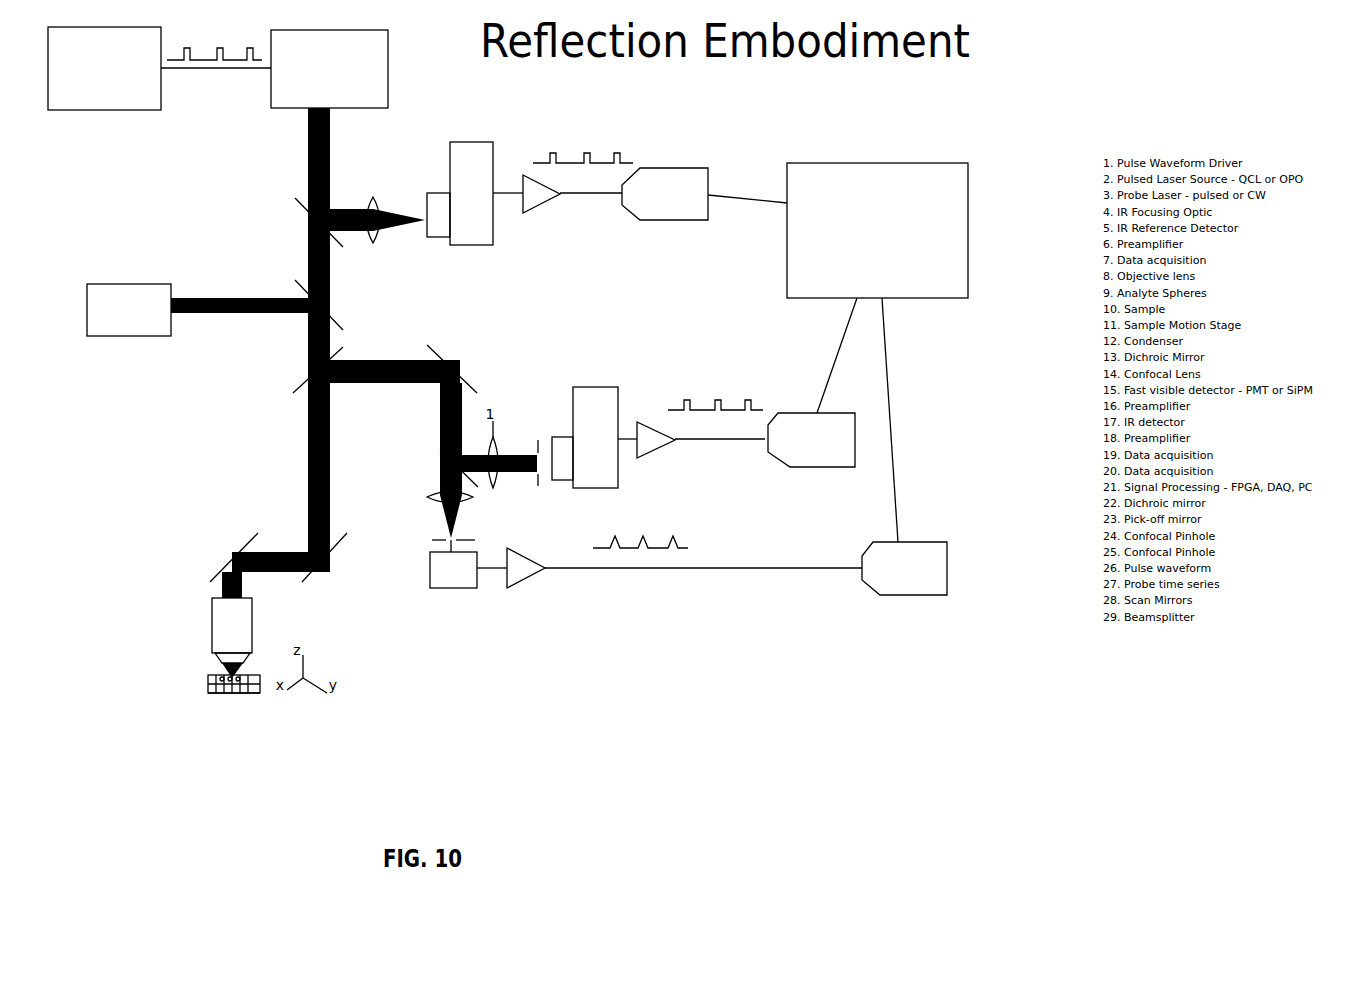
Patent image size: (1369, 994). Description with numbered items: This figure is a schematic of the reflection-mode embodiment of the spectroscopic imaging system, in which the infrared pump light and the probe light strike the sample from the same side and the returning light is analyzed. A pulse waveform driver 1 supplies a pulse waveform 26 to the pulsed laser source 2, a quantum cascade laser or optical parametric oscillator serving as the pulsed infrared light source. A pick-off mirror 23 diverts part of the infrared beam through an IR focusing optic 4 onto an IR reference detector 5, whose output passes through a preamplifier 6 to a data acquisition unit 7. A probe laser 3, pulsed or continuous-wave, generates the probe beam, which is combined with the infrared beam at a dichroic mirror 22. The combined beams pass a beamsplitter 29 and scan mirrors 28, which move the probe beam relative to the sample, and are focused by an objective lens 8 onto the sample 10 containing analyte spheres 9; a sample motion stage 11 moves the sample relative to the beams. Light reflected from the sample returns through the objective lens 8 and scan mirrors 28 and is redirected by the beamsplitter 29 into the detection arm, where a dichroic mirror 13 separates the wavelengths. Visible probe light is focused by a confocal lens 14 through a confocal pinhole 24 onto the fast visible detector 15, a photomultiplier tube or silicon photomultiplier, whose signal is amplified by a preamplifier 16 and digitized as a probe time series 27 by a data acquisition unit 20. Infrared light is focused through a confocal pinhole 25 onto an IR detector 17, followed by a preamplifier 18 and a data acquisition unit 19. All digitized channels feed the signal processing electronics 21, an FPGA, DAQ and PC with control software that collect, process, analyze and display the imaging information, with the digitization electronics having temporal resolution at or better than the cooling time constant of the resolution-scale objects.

The pulse waveform driver 1 is at (159, 68).
The pulsed laser source 2 is at (329, 69).
The probe laser 3 is at (129, 310).
The IR focusing optic 4 is at (375, 200).
The IR reference detector 5 is at (460, 193).
The preamplifier 6 is at (557, 194).
The data acquisition 7 is at (660, 184).
The objective lens 8 is at (232, 638).
The analyte spheres 9 is at (215, 678).
The sample 10 is at (208, 682).
The sample motion stage 11 is at (215, 690).
The dichroic mirror 13 is at (440, 450).
The confocal lens 14 is at (427, 497).
The fast visible detector 15 is at (453, 570).
The preamplifier 16 is at (669, 568).
The IR detector 17 is at (585, 437).
The preamplifier 18 is at (691, 440).
The data acquisition 19 is at (761, 429).
The data acquisition 20 is at (904, 558).
The signal processing 21 is at (877, 352).
The dichroic mirror 22 is at (333, 305).
The pick-off mirror 23 is at (311, 213).
The confocal pinhole 24 is at (439, 542).
The confocal pinhole 25 is at (535, 452).
The pulse waveform 26 is at (214, 33).
The probe time series 27 is at (640, 532).
The scan mirrors 28 is at (281, 558).
The beamsplitter 29 is at (301, 370).